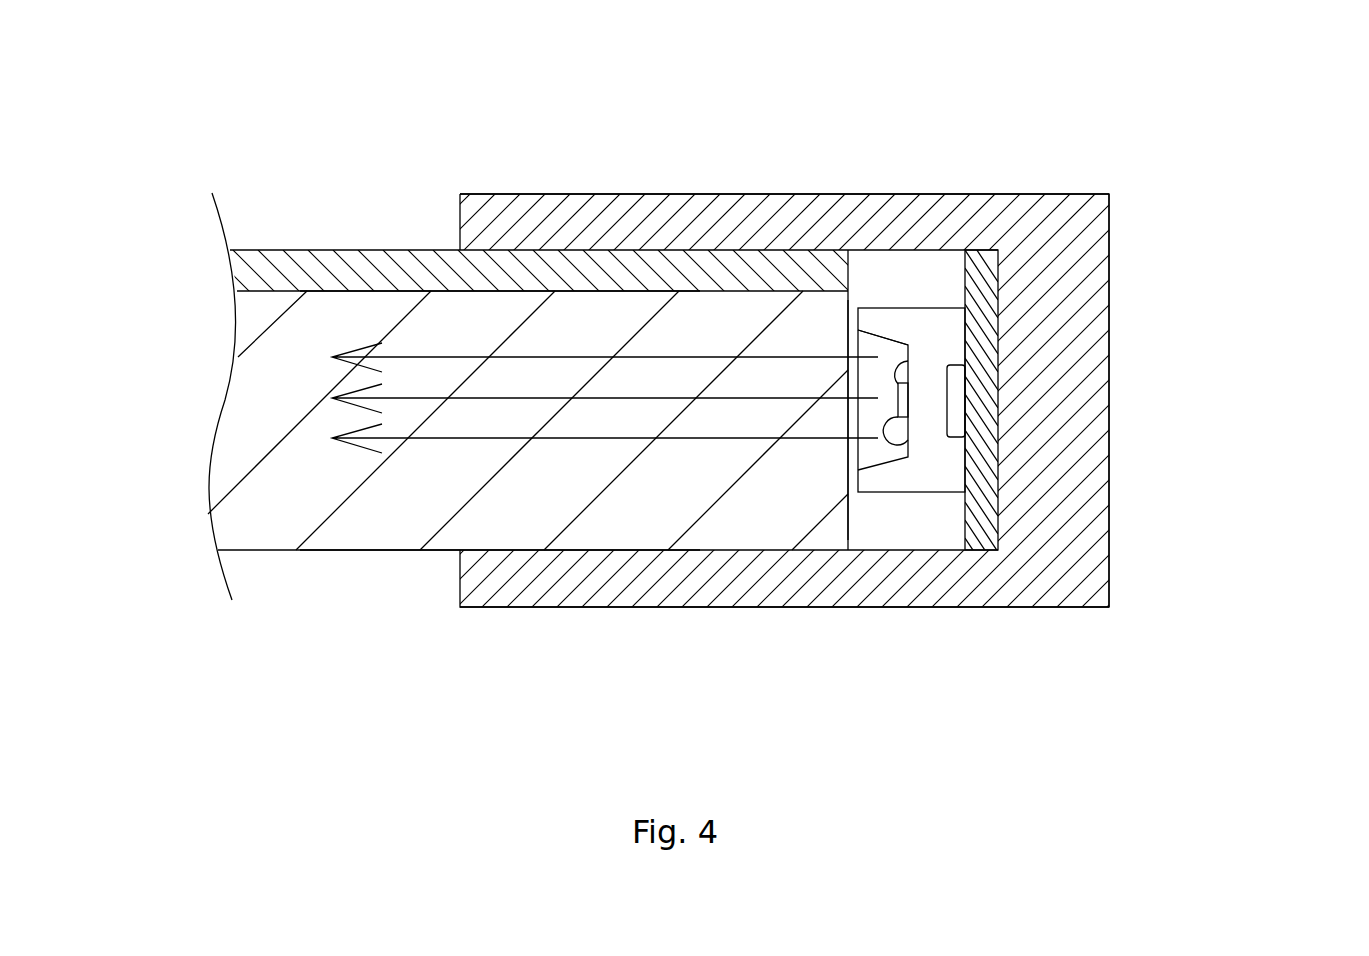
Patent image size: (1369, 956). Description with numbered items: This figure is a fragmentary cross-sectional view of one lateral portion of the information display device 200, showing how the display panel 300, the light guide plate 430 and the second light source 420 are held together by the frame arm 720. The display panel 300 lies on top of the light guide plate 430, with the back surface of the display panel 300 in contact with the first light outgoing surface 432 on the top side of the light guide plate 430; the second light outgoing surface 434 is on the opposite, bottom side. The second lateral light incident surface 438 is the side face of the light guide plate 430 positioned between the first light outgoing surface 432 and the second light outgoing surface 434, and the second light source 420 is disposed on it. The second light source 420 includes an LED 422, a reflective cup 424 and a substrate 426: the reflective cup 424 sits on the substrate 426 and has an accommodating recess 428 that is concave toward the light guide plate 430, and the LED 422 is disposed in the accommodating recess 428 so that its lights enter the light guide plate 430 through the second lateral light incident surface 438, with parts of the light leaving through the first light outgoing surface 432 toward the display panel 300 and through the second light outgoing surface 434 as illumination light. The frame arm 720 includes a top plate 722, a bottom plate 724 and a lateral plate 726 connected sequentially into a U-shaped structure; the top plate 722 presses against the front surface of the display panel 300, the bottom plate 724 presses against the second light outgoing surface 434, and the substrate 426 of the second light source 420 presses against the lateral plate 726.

The information display device 200 is at (178, 117).
The display panel 300 is at (338, 265).
The second light source 420 is at (943, 493).
The LED 422 is at (897, 405).
The reflective cup 424 is at (903, 318).
The substrate 426 is at (962, 265).
The accommodating recess 428 is at (860, 346).
The light guide plate 430 is at (285, 530).
The first light outgoing surface 432 is at (500, 290).
The second light outgoing surface 434 is at (400, 550).
The second lateral light incident surface 438 is at (845, 483).
The frame arm 720 is at (1262, 268).
The top plate 722 is at (660, 210).
The bottom plate 724 is at (717, 588).
The lateral plate 726 is at (1109, 343).